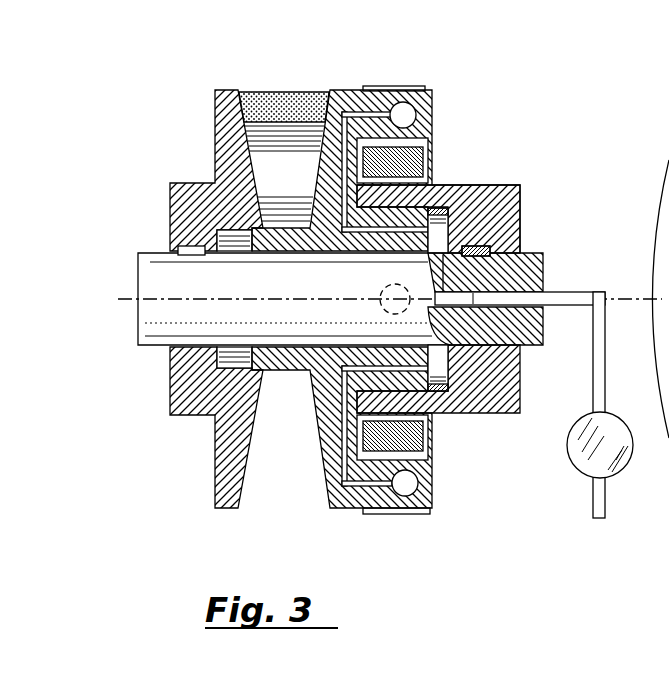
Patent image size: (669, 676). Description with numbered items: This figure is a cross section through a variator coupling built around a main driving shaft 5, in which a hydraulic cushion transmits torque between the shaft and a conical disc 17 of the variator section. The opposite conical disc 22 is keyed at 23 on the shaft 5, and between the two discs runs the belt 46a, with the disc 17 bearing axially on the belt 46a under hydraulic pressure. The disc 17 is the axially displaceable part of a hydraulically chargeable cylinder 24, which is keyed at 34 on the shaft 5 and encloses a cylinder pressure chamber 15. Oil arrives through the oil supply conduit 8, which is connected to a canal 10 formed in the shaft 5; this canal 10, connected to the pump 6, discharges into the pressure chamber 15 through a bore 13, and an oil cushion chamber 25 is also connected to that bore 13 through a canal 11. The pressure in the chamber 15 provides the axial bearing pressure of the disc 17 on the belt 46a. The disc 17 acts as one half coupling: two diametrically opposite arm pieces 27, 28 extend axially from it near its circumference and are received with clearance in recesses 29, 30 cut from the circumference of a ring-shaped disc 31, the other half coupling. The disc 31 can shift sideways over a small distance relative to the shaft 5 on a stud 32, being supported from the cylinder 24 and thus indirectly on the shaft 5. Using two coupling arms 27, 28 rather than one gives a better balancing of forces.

The shaft 5 is at (160, 330).
The pump 6 is at (623, 463).
The oil supply conduit 8 is at (569, 308).
The canal 10 is at (523, 343).
The canal 11 is at (317, 173).
The bore 13 is at (542, 268).
The cylinder pressure chamber 15 is at (505, 212).
The conical disc 17 is at (313, 136).
The conical disc 22 is at (220, 105).
The key 23 is at (192, 250).
The hydraulically chargeable cylinder 24 is at (463, 197).
The oil cushion chamber 25 is at (410, 118).
The arm piece 27 is at (433, 95).
The arm piece 28 is at (423, 482).
The recess 29 is at (390, 86).
The recess 30 is at (410, 514).
The disc 31 is at (420, 440).
The stud 32 is at (385, 290).
The key 34 is at (470, 278).
The belt 46a is at (266, 108).